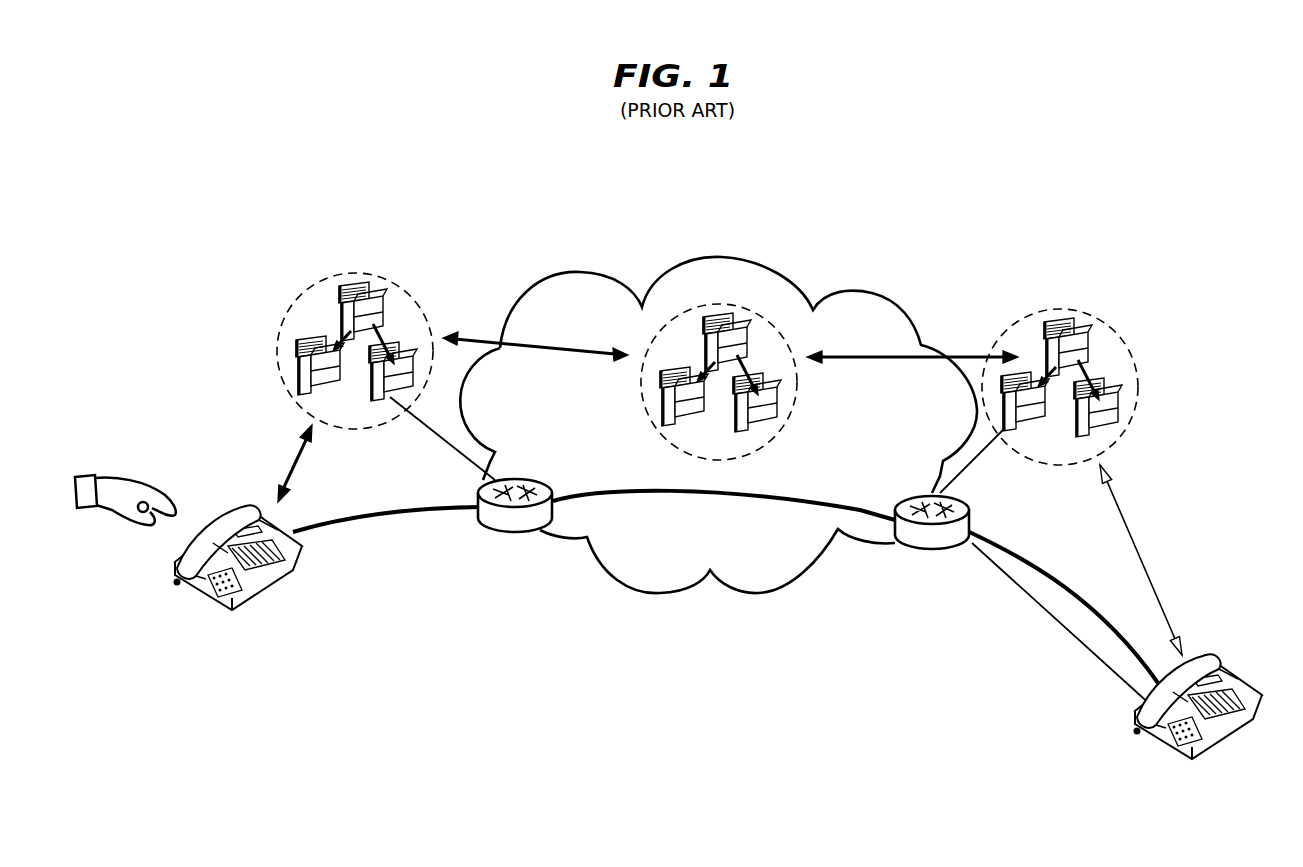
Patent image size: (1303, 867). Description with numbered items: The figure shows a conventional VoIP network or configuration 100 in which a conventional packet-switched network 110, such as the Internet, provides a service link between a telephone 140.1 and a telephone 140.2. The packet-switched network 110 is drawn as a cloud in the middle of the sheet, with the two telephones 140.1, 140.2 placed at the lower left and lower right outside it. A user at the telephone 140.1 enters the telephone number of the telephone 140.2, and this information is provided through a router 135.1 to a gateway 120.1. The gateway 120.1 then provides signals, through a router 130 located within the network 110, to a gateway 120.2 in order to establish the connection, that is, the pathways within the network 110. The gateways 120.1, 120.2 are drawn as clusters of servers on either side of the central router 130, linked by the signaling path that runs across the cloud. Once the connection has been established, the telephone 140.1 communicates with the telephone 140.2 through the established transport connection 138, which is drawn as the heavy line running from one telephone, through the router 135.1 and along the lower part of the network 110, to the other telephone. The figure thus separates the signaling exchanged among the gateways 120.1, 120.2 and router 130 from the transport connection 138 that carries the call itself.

The VoIP network or configuration 100 is at (904, 183).
The packet-switched network 110 is at (878, 292).
The gateway 120.1 is at (398, 277).
The gateway 120.2 is at (1103, 328).
The router 130 is at (716, 303).
The router 135.1 is at (488, 530).
The transport connection 138 is at (713, 493).
The telephone 140.1 is at (213, 602).
The telephone 140.2 is at (1160, 745).